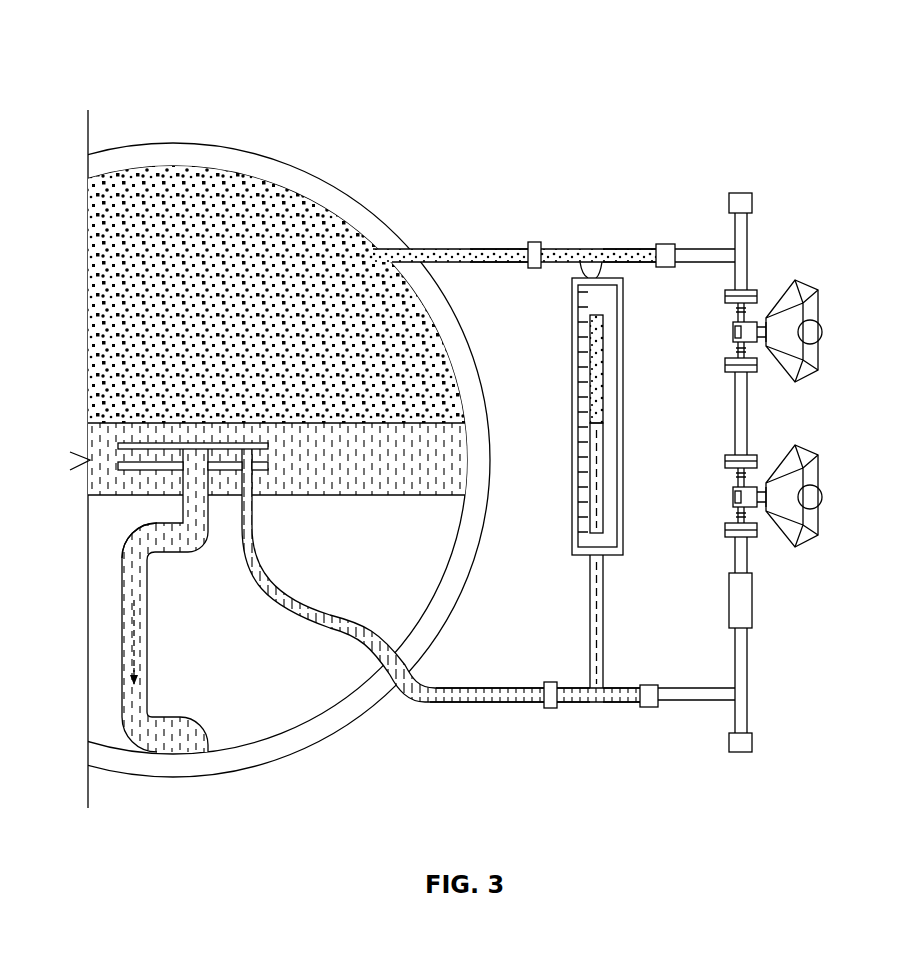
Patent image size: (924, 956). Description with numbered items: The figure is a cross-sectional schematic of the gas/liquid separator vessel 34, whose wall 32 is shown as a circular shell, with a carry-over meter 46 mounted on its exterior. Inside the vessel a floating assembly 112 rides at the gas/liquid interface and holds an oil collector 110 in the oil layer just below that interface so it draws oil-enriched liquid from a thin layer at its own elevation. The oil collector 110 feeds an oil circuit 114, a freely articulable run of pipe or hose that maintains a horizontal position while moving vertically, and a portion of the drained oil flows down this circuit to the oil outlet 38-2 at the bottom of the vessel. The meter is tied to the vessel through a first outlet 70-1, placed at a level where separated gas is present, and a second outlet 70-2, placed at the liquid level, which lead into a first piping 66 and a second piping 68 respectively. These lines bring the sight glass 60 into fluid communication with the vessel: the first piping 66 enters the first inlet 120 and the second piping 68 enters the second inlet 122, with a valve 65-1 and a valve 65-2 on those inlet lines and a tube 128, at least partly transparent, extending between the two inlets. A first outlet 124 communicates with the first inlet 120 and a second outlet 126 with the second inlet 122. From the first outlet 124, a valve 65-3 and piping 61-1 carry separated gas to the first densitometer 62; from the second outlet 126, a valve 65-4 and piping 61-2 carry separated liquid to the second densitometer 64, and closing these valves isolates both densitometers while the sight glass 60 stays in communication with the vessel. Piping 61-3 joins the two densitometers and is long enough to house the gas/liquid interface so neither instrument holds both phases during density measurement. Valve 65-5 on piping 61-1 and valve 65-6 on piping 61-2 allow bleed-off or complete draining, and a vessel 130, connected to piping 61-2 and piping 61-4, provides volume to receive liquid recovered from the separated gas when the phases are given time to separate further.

The tank wall 32 is at (262, 157).
The gas/liquid separator vessel 34 is at (183, 143).
The oil outlet 38-2 is at (190, 753).
The carry-over meter 46 is at (786, 90).
The sight glass 60 is at (572, 417).
The piping 61-1 is at (748, 270).
The piping 61-2 is at (748, 665).
The piping 61-3 is at (748, 420).
The piping 61-4 is at (748, 555).
The first densitometer 62 is at (820, 300).
The second densitometer 64 is at (820, 465).
The valve 65-1 is at (536, 242).
The valve 65-2 is at (550, 708).
The valve 65-3 is at (667, 268).
The valve 65-4 is at (650, 685).
The valve 65-5 is at (745, 193).
The valve 65-6 is at (752, 745).
The first piping 66 is at (496, 249).
The second piping 68 is at (477, 703).
The first outlet 70-1 is at (440, 220).
The second outlet 70-2 is at (398, 700).
The oil collector 110 is at (118, 466).
The floating assembly 112 is at (120, 548).
The oil circuit 114 is at (122, 570).
The first inlet 120 is at (565, 249).
The second inlet 122 is at (563, 705).
The first outlet 124 is at (632, 249).
The second outlet 126 is at (617, 705).
The tube 128 is at (575, 573).
The vessel 130 is at (752, 600).